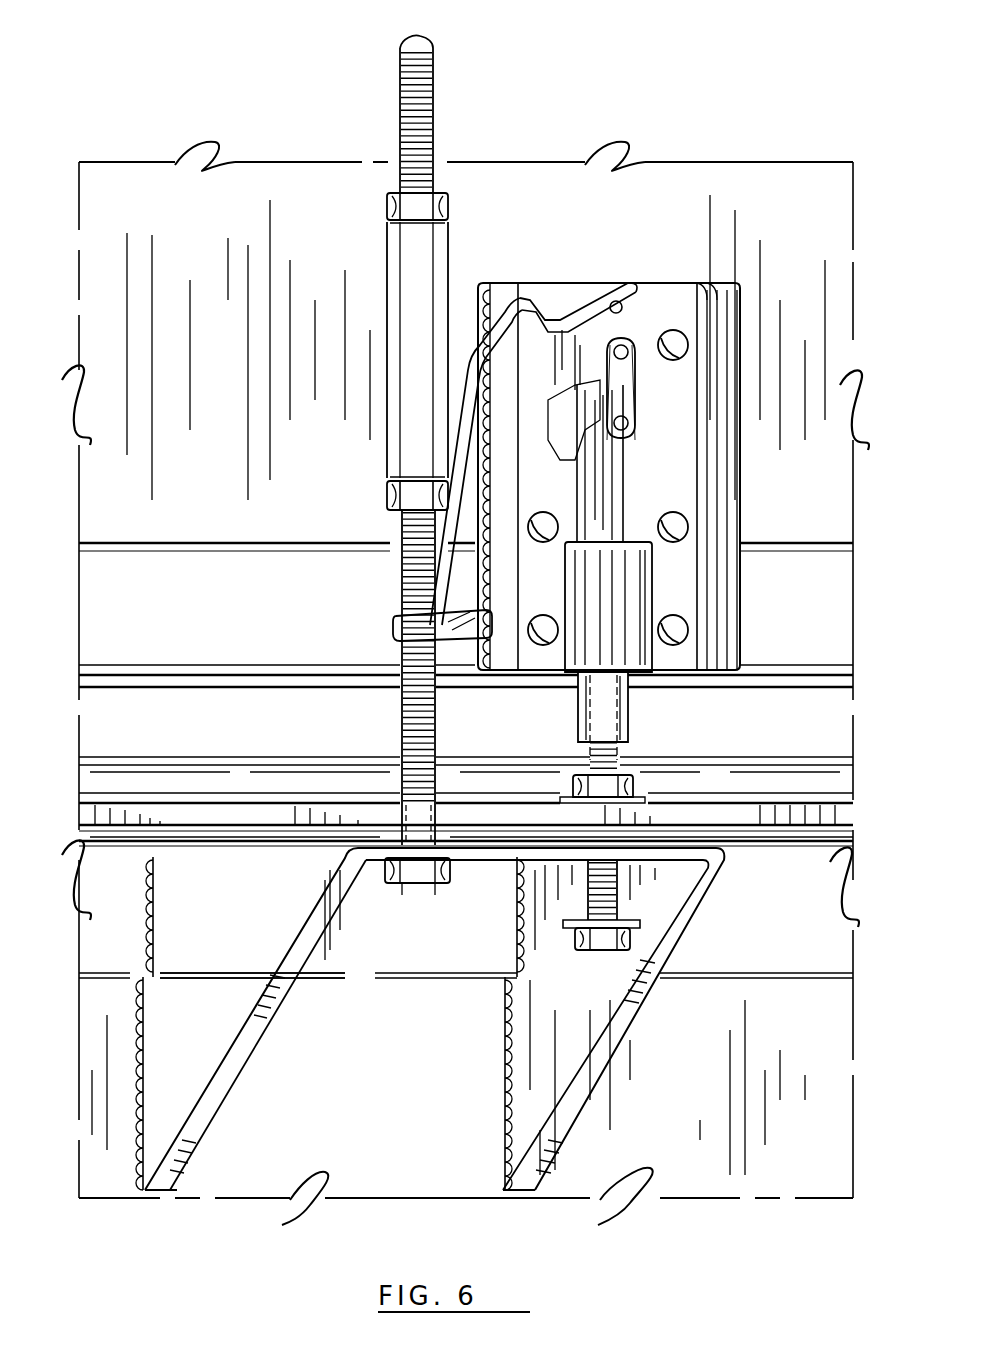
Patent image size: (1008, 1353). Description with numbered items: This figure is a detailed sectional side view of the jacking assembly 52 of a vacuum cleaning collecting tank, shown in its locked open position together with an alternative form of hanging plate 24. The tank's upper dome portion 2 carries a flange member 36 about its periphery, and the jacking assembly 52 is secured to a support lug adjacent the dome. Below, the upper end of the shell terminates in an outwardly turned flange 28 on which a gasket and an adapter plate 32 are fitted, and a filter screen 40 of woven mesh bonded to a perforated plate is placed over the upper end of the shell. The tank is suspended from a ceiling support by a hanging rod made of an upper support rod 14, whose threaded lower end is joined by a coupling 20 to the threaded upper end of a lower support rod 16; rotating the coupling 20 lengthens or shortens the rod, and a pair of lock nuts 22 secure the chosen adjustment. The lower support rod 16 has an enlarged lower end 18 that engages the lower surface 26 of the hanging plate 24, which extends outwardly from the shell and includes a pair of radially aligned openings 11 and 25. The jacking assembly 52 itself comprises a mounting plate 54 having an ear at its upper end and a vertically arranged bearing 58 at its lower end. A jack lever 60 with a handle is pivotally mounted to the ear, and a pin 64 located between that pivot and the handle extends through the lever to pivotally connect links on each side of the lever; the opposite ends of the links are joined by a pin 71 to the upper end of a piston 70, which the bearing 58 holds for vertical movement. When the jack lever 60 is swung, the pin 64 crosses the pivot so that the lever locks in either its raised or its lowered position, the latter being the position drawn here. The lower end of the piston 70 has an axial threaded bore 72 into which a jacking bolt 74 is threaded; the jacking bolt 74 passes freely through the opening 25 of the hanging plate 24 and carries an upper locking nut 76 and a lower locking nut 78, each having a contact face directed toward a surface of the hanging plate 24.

The dome portion 2 is at (200, 258).
The opening 11 is at (398, 818).
The upper support rod 14 is at (434, 88).
The lower support rod 16 is at (400, 590).
The enlarged lower end 18 is at (412, 888).
The coupling 20 is at (386, 255).
The lock nut 22 is at (450, 208).
The hanging plate 24 is at (228, 970).
The opening 25 is at (588, 830).
The lower surface 26 is at (504, 905).
The outwardly turned flange 28 is at (790, 848).
The adapter plate 32 is at (855, 822).
The flange member 36 is at (825, 688).
The filter screen 40 is at (252, 757).
The jacking assembly 52 is at (648, 150).
The mounting plate 54 is at (690, 478).
The bearing 58 is at (618, 605).
The jack lever 60 is at (520, 434).
The pin 64 is at (628, 352).
The piston 70 is at (628, 712).
The pin 71 is at (628, 425).
The threaded bore 72 is at (578, 712).
The jacking bolt 74 is at (620, 886).
The upper locking nut 76 is at (636, 790).
The lower locking nut 78 is at (634, 940).